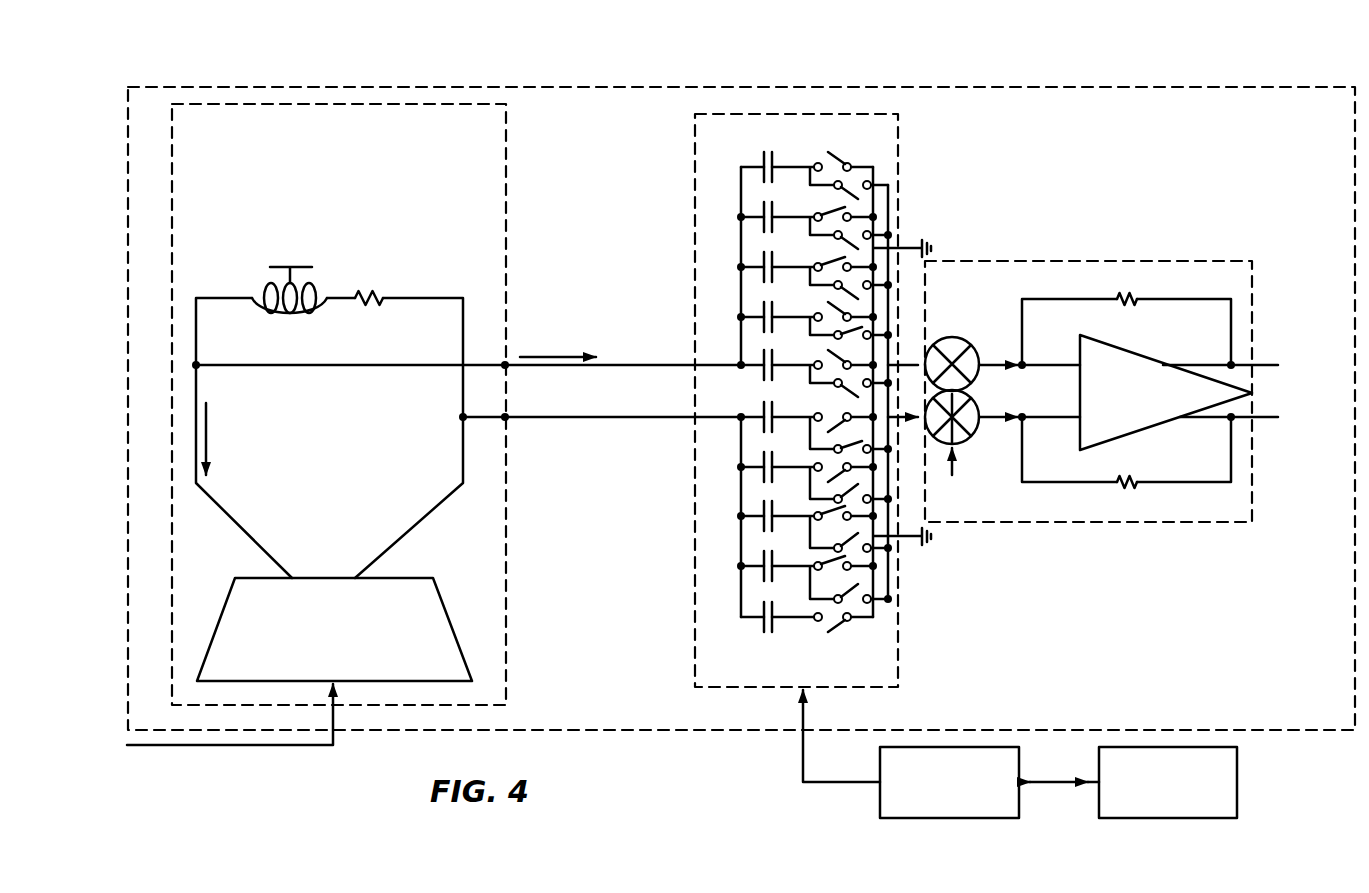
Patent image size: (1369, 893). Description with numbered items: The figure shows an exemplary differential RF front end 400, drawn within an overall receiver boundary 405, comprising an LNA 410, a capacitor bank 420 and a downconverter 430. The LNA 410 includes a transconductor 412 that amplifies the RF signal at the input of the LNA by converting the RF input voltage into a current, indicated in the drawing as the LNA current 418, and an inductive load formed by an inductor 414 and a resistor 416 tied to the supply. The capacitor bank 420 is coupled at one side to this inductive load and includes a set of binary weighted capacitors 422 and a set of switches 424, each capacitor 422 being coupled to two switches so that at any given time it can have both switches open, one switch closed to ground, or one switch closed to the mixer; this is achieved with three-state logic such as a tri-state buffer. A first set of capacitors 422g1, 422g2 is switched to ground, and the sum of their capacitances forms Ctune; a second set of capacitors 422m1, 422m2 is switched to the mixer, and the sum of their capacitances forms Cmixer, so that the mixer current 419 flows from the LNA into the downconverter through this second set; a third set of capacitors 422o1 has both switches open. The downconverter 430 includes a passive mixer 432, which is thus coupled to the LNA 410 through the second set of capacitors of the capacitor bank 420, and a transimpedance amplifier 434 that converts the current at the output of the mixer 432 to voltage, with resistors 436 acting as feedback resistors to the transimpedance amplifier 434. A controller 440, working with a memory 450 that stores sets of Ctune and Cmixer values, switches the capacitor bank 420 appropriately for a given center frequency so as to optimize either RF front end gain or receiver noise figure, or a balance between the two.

The RF FE 400 is at (210, 70).
The receiver 405 is at (1305, 87).
The LNA 410 is at (507, 126).
The transconductor 412 is at (408, 578).
The inductor 414 is at (270, 285).
The resistor 416 is at (376, 290).
The LNA current ILNA 418 is at (214, 462).
The mixer current Imixer 419 is at (540, 327).
The capacitor bank 420 is at (695, 123).
The capacitors 422 is at (762, 156).
The third set of capacitors 422o1 is at (736, 177).
The first set of capacitors 422g1 is at (736, 208).
The first set of capacitors 422g2 is at (725, 268).
The second set of capacitors 422m1 is at (725, 308).
The second set of capacitors 422m2 is at (725, 362).
The switches 424 is at (878, 166).
The downconverter 430 is at (1210, 261).
The mixer 432 is at (978, 373).
The transimpedance amplifier 434 is at (1130, 348).
The resistors 436 is at (1133, 294).
The controller 440 is at (1019, 763).
The memory 450 is at (1237, 763).